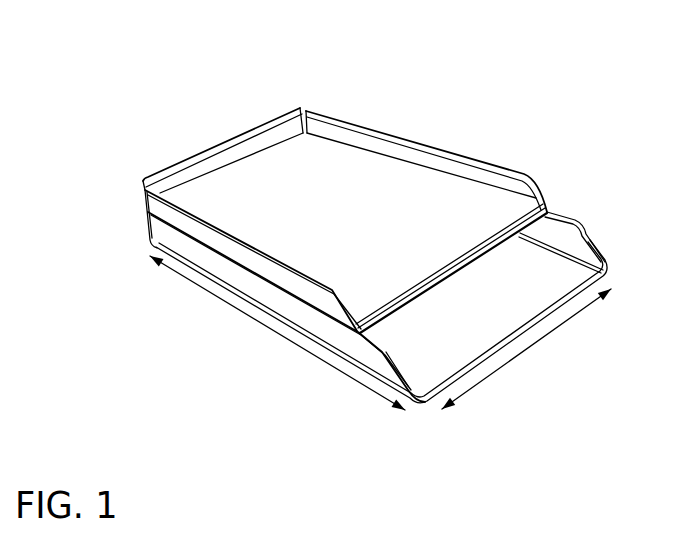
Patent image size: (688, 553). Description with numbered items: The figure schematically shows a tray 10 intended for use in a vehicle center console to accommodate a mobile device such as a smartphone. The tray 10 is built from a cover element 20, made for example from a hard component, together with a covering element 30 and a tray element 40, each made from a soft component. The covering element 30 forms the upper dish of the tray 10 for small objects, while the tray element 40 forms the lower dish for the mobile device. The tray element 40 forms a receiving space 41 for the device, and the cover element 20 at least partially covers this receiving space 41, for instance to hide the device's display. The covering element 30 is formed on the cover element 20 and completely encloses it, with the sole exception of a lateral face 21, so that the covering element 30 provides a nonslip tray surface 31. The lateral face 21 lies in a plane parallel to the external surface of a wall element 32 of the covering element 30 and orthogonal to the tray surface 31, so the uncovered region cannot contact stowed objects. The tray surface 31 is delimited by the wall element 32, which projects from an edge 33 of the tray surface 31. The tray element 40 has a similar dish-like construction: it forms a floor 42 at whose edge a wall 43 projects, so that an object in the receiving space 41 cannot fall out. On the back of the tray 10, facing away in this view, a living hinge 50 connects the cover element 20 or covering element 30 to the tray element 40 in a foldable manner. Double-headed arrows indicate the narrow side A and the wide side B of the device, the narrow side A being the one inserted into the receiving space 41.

The tray 10 is at (546, 78).
The cover element 20 is at (191, 246).
The lateral face 21 is at (247, 278).
The covering element 30 is at (141, 169).
The tray surface 31 is at (457, 213).
The wall element 32 is at (351, 124).
The edge 33 is at (258, 124).
The tray element 40 is at (461, 378).
The receiving space 41 is at (519, 299).
The floor 42 is at (499, 324).
The wall 43 is at (584, 235).
The living hinge 50 is at (141, 209).
The narrow side A is at (495, 374).
The wide side B is at (283, 338).